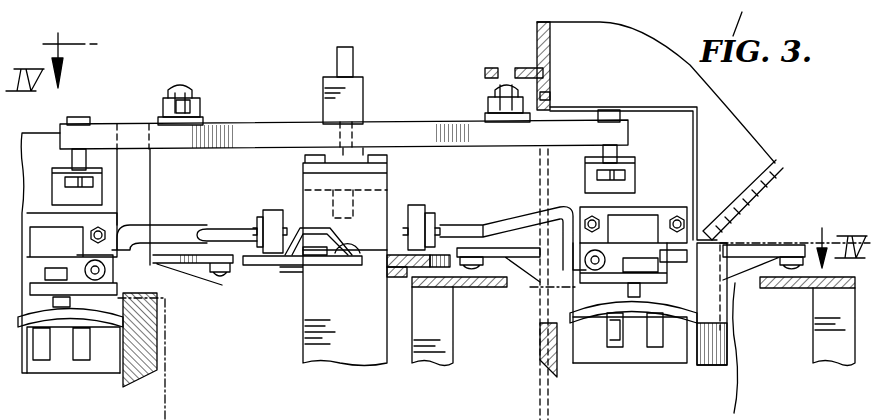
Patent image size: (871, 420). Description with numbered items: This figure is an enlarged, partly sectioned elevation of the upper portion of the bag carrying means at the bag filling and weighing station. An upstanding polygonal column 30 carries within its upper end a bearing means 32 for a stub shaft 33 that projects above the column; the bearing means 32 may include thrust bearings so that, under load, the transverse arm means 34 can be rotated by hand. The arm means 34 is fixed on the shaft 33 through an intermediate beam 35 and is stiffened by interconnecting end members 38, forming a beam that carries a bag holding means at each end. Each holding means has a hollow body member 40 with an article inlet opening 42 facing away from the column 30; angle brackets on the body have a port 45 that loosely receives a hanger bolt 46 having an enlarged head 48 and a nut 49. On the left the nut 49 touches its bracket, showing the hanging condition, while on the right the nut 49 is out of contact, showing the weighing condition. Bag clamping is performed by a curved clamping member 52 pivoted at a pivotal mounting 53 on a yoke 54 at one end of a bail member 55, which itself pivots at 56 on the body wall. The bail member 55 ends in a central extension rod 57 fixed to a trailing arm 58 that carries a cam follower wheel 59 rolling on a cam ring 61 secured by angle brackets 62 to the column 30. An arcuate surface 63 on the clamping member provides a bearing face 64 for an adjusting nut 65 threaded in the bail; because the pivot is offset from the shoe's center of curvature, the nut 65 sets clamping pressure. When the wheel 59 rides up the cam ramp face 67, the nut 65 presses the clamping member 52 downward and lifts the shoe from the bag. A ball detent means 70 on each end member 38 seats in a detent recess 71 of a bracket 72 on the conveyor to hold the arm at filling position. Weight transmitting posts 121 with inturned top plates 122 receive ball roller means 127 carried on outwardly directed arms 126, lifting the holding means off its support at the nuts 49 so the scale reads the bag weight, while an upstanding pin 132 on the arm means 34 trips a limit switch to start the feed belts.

The column 30 is at (310, 350).
The bearing means 32 is at (365, 226).
The stub shaft 33 is at (338, 60).
The transverse arm means 34 is at (418, 128).
The intermediate beam 35 is at (324, 98).
The end members 38 is at (205, 121).
The body member 40 is at (42, 142).
The article inlet opening 42 is at (730, 244).
The port 45 is at (150, 163).
The hanger bolt 46 is at (78, 158).
The enlarged head 48 is at (610, 113).
The nut 49 is at (85, 190).
The clamping member 52 is at (57, 352).
The pivotal mounting 53 is at (118, 347).
The yoke 54 is at (618, 338).
The bail member 55 is at (185, 236).
The pivot 56 is at (105, 270).
The extension rod 57 is at (447, 230).
The trailing arm 58 is at (272, 262).
The cam follower wheel 59 is at (272, 212).
The cam ring 61 is at (245, 265).
The angle brackets 62 is at (287, 278).
The arcuate surface 63 is at (673, 290).
The bearing face 64 is at (640, 300).
The adjusting nut 65 is at (650, 262).
The cam ramp face 67 is at (355, 250).
The ball detent means 70 is at (180, 85).
The detent recess 71 is at (508, 75).
The bracket 72 is at (545, 66).
The weight transmitting posts 121 is at (430, 342).
The top plates 122 is at (447, 288).
The arms 126 is at (752, 247).
The ball roller means 127 is at (470, 272).
The pin 132 is at (186, 108).